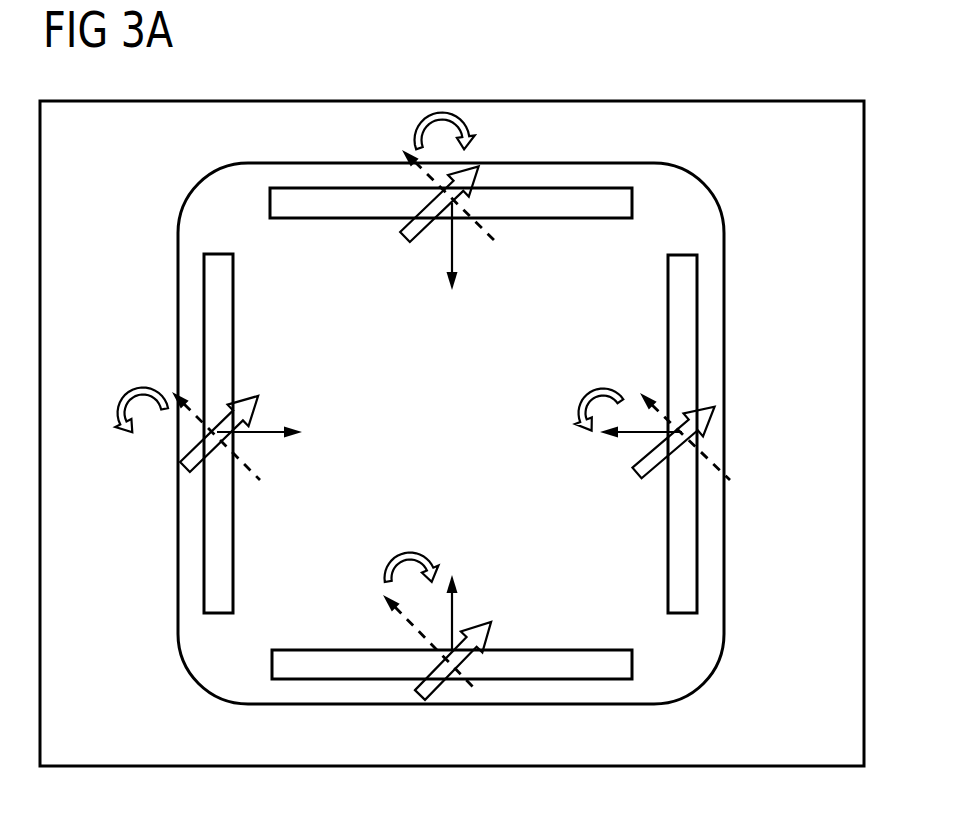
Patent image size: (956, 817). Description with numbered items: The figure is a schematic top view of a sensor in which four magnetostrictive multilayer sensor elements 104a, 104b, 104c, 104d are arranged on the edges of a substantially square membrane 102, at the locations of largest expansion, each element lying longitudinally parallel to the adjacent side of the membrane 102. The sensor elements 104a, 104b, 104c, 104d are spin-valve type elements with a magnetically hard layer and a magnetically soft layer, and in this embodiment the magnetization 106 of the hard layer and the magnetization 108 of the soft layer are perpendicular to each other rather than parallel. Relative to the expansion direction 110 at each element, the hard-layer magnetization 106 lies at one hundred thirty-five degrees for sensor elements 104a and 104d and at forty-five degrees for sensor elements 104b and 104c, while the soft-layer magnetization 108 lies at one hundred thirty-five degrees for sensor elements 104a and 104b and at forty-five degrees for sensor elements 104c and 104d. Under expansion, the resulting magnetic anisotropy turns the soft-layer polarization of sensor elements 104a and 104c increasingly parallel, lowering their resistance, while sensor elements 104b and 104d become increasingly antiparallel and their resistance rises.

The membrane 102 is at (466, 399).
The sensor element 104a is at (328, 219).
The sensor element 104b is at (233, 323).
The sensor element 104c is at (337, 650).
The sensor element 104d is at (668, 570).
The magnetization of the magnetically hard layer 106 is at (647, 473).
The magnetization of the magnetically soft layer 108 is at (647, 395).
The expansion direction 110 is at (608, 437).